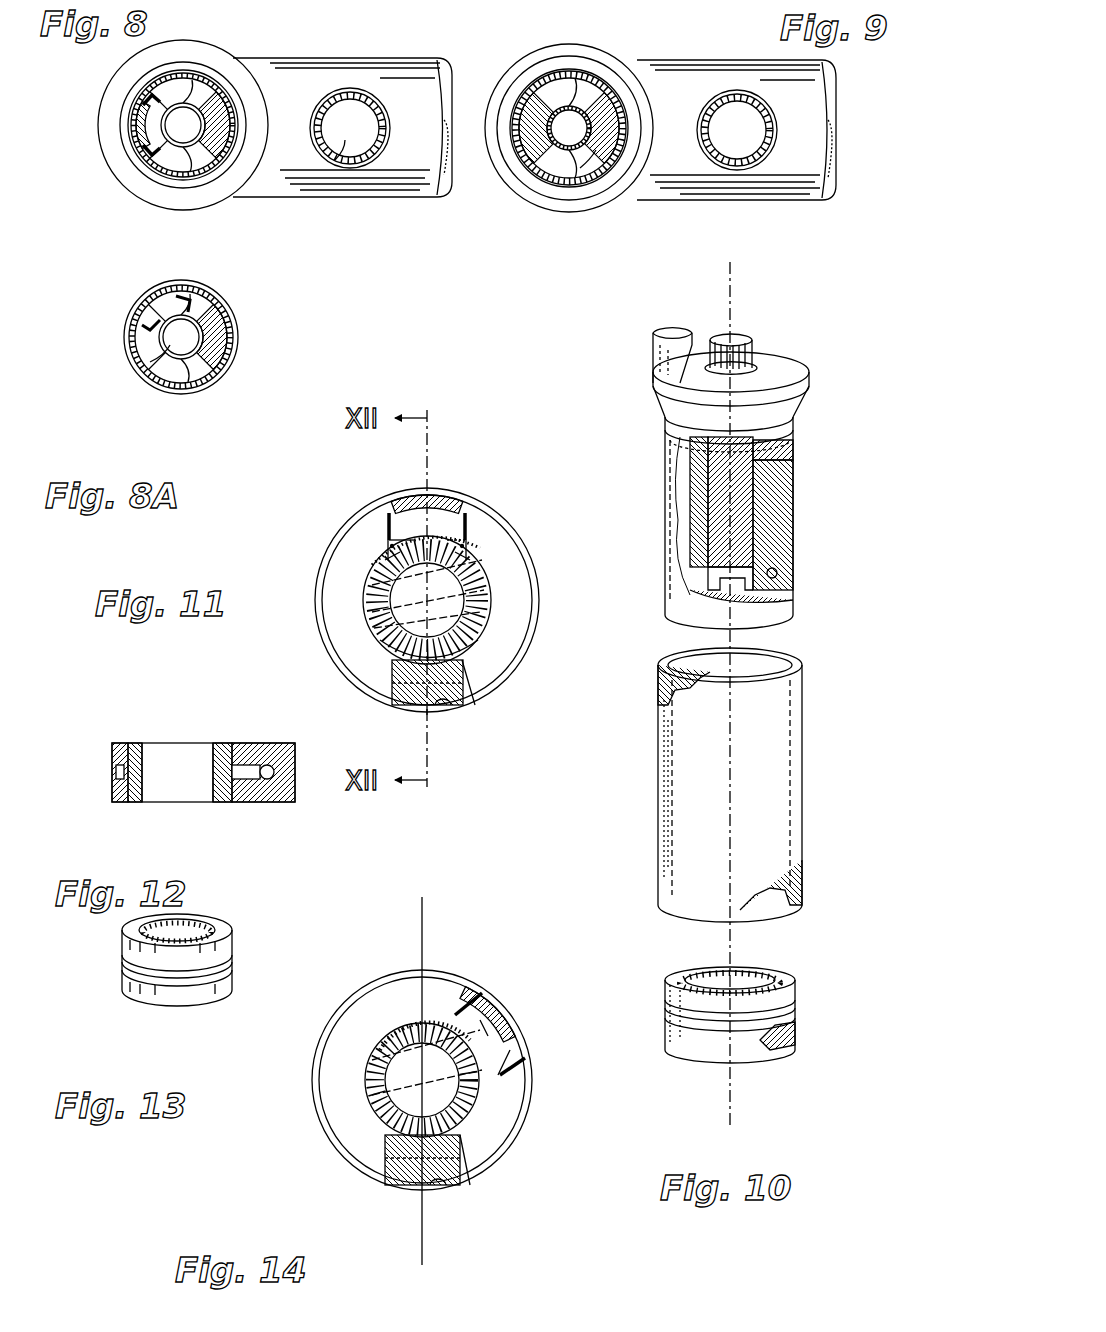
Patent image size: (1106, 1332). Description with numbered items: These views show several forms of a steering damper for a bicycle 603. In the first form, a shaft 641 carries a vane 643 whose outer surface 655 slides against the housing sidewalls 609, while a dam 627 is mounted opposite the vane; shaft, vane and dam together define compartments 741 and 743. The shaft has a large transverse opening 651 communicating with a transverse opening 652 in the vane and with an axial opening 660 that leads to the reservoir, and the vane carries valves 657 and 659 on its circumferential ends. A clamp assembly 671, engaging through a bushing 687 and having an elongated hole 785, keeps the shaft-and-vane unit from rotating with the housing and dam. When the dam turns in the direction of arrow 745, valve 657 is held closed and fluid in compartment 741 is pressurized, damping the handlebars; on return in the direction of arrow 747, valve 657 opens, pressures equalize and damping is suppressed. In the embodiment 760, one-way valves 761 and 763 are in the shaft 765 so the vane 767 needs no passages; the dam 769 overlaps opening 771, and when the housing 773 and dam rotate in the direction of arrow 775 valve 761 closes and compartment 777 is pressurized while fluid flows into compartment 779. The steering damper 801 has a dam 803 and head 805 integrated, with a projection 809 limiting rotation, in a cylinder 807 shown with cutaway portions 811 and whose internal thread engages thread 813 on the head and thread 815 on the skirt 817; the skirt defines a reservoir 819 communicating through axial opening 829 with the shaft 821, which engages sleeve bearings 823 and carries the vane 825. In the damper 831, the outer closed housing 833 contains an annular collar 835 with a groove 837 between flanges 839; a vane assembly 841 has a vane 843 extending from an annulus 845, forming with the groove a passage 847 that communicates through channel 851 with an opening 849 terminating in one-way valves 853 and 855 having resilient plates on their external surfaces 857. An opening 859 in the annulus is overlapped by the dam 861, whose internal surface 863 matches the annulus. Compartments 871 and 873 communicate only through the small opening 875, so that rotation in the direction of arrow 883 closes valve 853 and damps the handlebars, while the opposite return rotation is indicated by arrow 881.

In FIG. 8, the bicycle 603 is at (405, 72).
In FIG. 9, the bicycle 603 is at (828, 118).
In FIG. 8, the sidewalls 609 is at (148, 138).
In FIG. 8, the dam 627 is at (238, 140).
In FIG. 8A, the dam 627 is at (212, 355).
In FIG. 8, the shaft 641 is at (175, 178).
In FIG. 8A, the shaft 641 is at (150, 365).
In FIG. 8, the vane 643 is at (112, 96).
In FIG. 8A, the vane 643 is at (178, 282).
In FIG. 8, the transverse opening 651 is at (228, 112).
In FIG. 8A, the transverse opening 651 is at (183, 360).
In FIG. 8, the transverse opening 652 is at (138, 158).
In FIG. 8A, the transverse opening 652 is at (145, 308).
In FIG. 8, the outer surface 655 is at (140, 104).
In FIG. 8, the valve 657 is at (180, 63).
In FIG. 8A, the valve 657 is at (222, 262).
In FIG. 8, the valve 659 is at (118, 195).
In FIG. 8A, the valve 659 is at (124, 350).
In FIG. 8, the axial opening 660 is at (215, 150).
In FIG. 8A, the axial opening 660 is at (208, 370).
In FIG. 8, the clamp assembly 671 is at (335, 95).
In FIG. 9, the clamp assembly 671 is at (720, 175).
In FIG. 8, the bushing 687 is at (335, 185).
In FIG. 8, the compartment 741 is at (205, 88).
In FIG. 8A, the compartment 741 is at (205, 300).
In FIG. 8, the compartment 743 is at (186, 168).
In FIG. 8A, the compartment 743 is at (172, 380).
In FIG. 8A, the arrow 745 is at (293, 345).
In FIG. 8A, the arrow 747 is at (313, 318).
In FIG. 9, the embodiment 760 is at (538, 262).
In FIG. 9, the one-way valve 761 is at (542, 70).
In FIG. 9, the one-way valve 763 is at (530, 192).
In FIG. 9, the shaft 765 is at (582, 192).
In FIG. 9, the vane 767 is at (518, 165).
In FIG. 9, the dam 769 is at (622, 108).
In FIG. 9, the opening 771 is at (600, 90).
In FIG. 9, the housing 773 is at (528, 95).
In FIG. 9, the arrow 775 is at (630, 258).
In FIG. 9, the compartment 777 is at (560, 70).
In FIG. 9, the compartment 779 is at (570, 192).
In FIG. 8, the hole 785 is at (362, 188).
In FIG. 10, the steering damper 801 is at (625, 412).
In FIG. 10, the dam 803 is at (680, 520).
In FIG. 10, the head 805 is at (785, 402).
In FIG. 10, the cylinder 807 is at (805, 752).
In FIG. 10, the projection 809 is at (685, 332).
In FIG. 10, the cutaway portion 811 is at (662, 664).
In FIG. 10, the thread 813 is at (800, 425).
In FIG. 10, the thread 815 is at (795, 1002).
In FIG. 10, the skirt 817 is at (800, 1044).
In FIG. 10, the reservoir 819 is at (748, 982).
In FIG. 10, the shaft 821 is at (760, 352).
In FIG. 10, the sleeve bearings 823 is at (782, 462).
In FIG. 10, the vane 825 is at (790, 510).
In FIG. 10, the axial opening 829 is at (735, 618).
In FIG. 11, the damper 831 is at (535, 422).
In FIG. 14, the damper 831 is at (548, 922).
In FIG. 11, the outer closed housing 833 is at (410, 490).
In FIG. 14, the outer closed housing 833 is at (405, 970).
In FIG. 11, the annular collar 835 is at (365, 560).
In FIG. 12, the annular collar 835 is at (218, 803).
In FIG. 13, the annular collar 835 is at (142, 1015).
In FIG. 11, the groove 837 is at (365, 602).
In FIG. 13, the groove 837 is at (125, 962).
In FIG. 13, the flanges 839 is at (235, 952).
In FIG. 11, the vane assembly 841 is at (490, 558).
In FIG. 12, the vane assembly 841 is at (245, 808).
In FIG. 11, the vane 843 is at (430, 496).
In FIG. 12, the vane 843 is at (292, 806).
In FIG. 14, the vane 843 is at (520, 1040).
In FIG. 11, the annulus 845 is at (485, 562).
In FIG. 12, the annulus 845 is at (118, 803).
In FIG. 11, the passage 847 is at (488, 620).
In FIG. 12, the passage 847 is at (153, 722).
In FIG. 14, the passage 847 is at (366, 1038).
In FIG. 11, the opening 849 is at (452, 512).
In FIG. 12, the opening 849 is at (282, 745).
In FIG. 14, the opening 849 is at (492, 1016).
In FIG. 11, the channel 851 is at (386, 540).
In FIG. 12, the channel 851 is at (228, 745).
In FIG. 14, the channel 851 is at (520, 1056).
In FIG. 11, the one-way valve 853 is at (475, 535).
In FIG. 14, the one-way valve 853 is at (522, 1082).
In FIG. 11, the one-way valve 855 is at (380, 518).
In FIG. 14, the one-way valve 855 is at (463, 998).
In FIG. 11, the external surfaces 857 is at (393, 512).
In FIG. 11, the opening 859 is at (388, 676).
In FIG. 12, the opening 859 is at (112, 775).
In FIG. 14, the opening 859 is at (360, 1086).
In FIG. 11, the dam 861 is at (440, 712).
In FIG. 14, the dam 861 is at (440, 1188).
In FIG. 11, the internal surface 863 is at (462, 692).
In FIG. 11, the compartment 871 is at (515, 652).
In FIG. 14, the compartment 871 is at (512, 1132).
In FIG. 11, the compartment 873 is at (335, 642).
In FIG. 14, the compartment 873 is at (338, 1138).
In FIG. 11, the opening 875 is at (452, 706).
In FIG. 14, the opening 875 is at (470, 1182).
In FIG. 14, the rotation arrow 881 is at (408, 1262).
In FIG. 14, the arrow 883 is at (435, 1223).